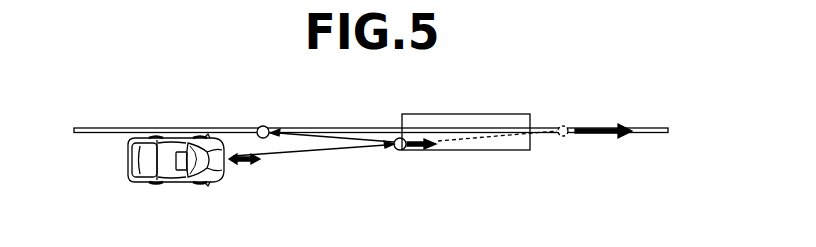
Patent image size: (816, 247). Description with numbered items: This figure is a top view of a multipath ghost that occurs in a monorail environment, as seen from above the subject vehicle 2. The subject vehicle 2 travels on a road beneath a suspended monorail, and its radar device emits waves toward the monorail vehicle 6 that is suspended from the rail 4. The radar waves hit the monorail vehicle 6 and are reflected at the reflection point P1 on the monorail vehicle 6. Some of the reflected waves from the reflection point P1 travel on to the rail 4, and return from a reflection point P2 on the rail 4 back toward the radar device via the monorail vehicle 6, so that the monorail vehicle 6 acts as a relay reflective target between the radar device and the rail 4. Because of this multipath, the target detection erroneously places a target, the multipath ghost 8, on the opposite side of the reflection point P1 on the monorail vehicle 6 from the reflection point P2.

The subject vehicle 2 is at (213, 165).
The rail 4 is at (204, 128).
The monorail vehicle 6 is at (492, 144).
The multipath ghost 8 is at (563, 125).
The reflection point P1 is at (400, 151).
The reflection point P2 is at (263, 125).